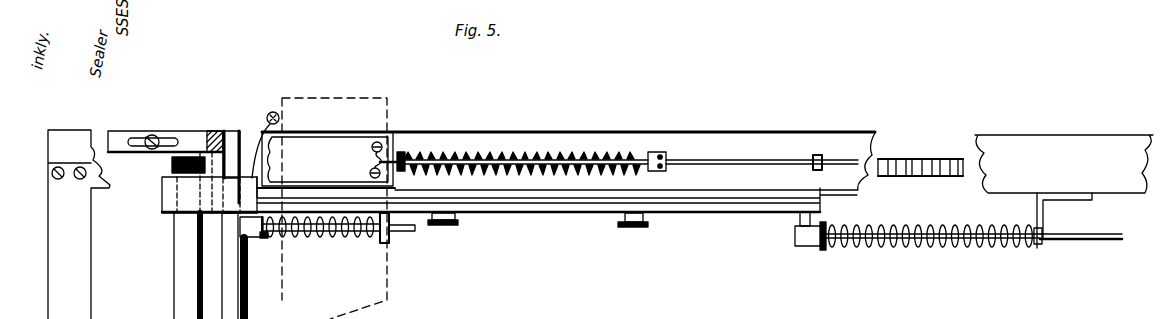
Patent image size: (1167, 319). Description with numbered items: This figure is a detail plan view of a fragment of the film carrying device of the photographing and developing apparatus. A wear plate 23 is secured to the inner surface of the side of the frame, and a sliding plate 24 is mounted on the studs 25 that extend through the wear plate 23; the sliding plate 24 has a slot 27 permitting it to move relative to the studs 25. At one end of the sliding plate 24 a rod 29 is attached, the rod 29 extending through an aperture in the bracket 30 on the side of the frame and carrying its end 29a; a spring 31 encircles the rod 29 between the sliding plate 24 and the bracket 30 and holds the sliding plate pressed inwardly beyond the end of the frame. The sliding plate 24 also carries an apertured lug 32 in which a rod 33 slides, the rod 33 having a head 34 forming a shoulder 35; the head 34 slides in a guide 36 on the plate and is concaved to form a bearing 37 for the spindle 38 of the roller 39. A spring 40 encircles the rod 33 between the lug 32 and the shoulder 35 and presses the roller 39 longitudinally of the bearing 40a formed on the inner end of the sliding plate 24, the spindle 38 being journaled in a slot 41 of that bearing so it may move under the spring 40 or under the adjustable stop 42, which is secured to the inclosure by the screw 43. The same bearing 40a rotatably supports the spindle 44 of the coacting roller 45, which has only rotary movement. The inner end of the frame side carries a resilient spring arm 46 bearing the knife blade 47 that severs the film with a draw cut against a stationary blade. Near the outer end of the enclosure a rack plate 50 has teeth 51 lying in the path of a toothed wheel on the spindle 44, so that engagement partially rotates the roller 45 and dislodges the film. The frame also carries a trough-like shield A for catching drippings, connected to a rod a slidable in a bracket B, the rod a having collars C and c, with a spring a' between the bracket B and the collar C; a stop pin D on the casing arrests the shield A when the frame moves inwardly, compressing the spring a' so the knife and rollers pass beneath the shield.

The wear plate 23 is at (543, 197).
The sliding plate 24 is at (557, 208).
The studs 25 is at (630, 226).
The slot 27 is at (801, 228).
The rod 29 is at (915, 241).
The spring rod end 29a is at (1037, 250).
The bracket 30 is at (1063, 200).
The spring 31 is at (962, 241).
The lug 32 is at (386, 240).
The rod 33 is at (416, 231).
The head 34 is at (257, 238).
The shoulder 35 is at (275, 238).
The guide 36 is at (263, 217).
The bearing 37 is at (239, 232).
The spindle 38 is at (231, 134).
The roller 39 is at (248, 312).
The spring 40 is at (353, 222).
The bearing 40a is at (272, 131).
The slot 41 is at (209, 135).
The stop 42 is at (188, 140).
The screw 43 is at (152, 135).
The spindle 44 is at (162, 211).
The roller 45 is at (183, 265).
The spring arm 46 is at (340, 148).
The knife blade 47 is at (47, 206).
The rack plate 50 is at (889, 160).
The teeth 51 is at (930, 178).
The shield A is at (387, 278).
The bracket B is at (652, 151).
The collar C is at (400, 150).
The stop pin D is at (280, 118).
The rod a is at (762, 152).
The spring a' is at (586, 180).
The collar c is at (822, 160).